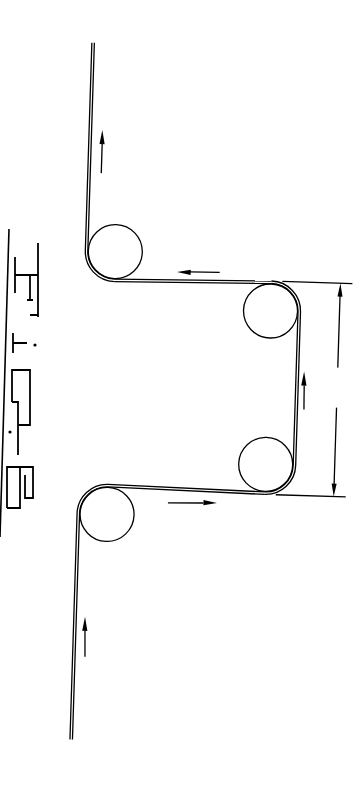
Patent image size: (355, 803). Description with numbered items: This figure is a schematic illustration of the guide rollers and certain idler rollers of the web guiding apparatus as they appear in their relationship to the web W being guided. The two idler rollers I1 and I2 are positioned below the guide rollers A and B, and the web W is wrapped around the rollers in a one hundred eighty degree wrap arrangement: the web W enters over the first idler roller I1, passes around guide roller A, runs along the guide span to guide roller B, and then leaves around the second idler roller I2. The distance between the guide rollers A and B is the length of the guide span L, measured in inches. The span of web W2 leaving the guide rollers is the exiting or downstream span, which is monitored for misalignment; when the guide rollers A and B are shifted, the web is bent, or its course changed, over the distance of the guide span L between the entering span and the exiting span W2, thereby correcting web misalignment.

The web W is at (193, 395).
The exiting span W2 is at (189, 387).
The idler roller I2 is at (118, 264).
The idler roller I1 is at (127, 525).
The guide roller B is at (275, 294).
The guide roller A is at (278, 474).
The length of guide span L is at (314, 389).